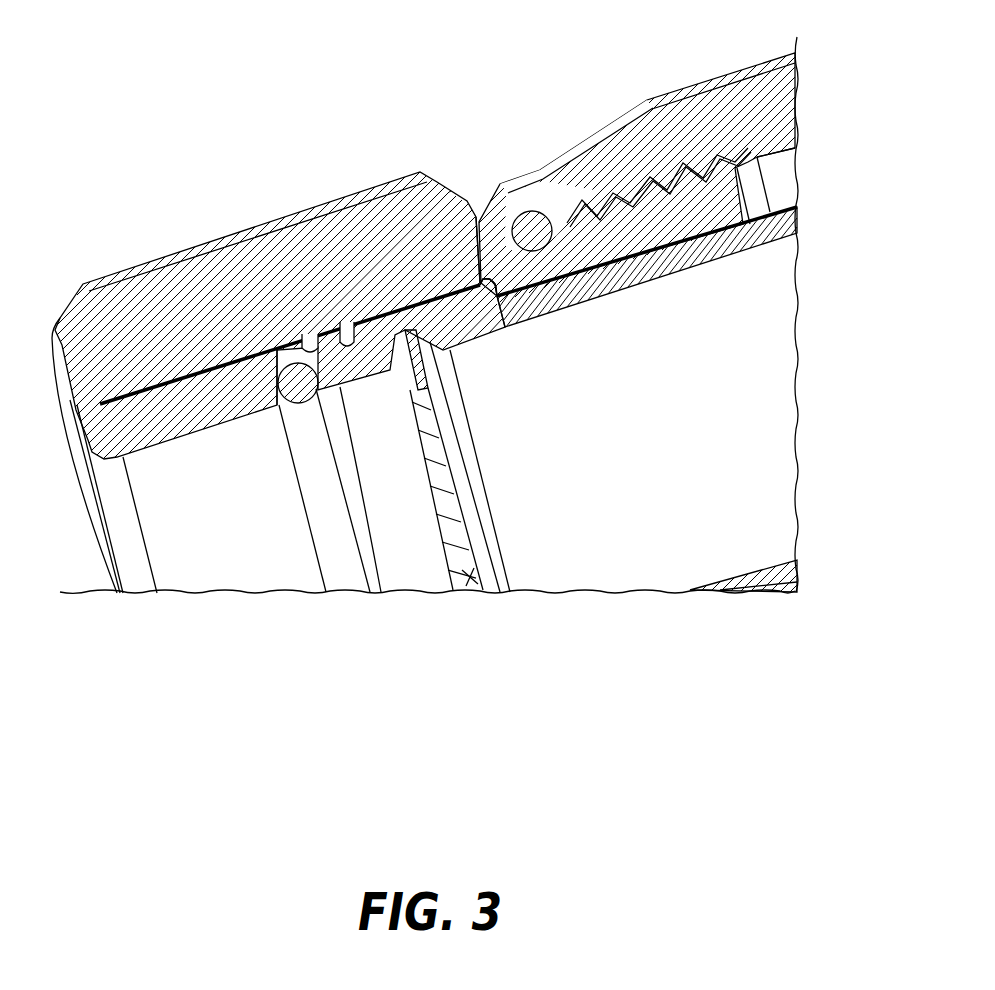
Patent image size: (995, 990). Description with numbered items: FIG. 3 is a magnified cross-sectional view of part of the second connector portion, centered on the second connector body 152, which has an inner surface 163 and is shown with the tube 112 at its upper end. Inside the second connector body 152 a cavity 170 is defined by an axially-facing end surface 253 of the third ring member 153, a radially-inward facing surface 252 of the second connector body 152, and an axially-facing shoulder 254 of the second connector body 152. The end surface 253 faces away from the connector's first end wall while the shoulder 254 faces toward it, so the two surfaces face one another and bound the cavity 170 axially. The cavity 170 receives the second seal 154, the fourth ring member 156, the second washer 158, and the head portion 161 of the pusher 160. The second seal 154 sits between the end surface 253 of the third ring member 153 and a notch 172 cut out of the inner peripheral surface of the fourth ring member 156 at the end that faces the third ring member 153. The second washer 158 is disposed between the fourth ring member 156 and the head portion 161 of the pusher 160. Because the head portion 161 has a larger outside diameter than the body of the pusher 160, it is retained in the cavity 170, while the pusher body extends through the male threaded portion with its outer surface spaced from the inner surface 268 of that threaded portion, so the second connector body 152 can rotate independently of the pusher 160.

The tube 112 is at (753, 102).
The second connector body 152 is at (98, 310).
The third ring member 153 is at (200, 578).
The second seal 154 is at (349, 576).
The fourth ring member 156 is at (428, 578).
The second washer 158 is at (473, 592).
The pusher 160 is at (655, 573).
The head portion 161 is at (436, 300).
The inner surface 163 is at (608, 287).
The cavity 170 is at (312, 350).
The notch 172 is at (382, 595).
The radially-inward facing surface 252 is at (347, 345).
The axially-facing end surface 253 is at (275, 355).
The axially-facing shoulder 254 is at (482, 268).
The inner surface 268 is at (682, 252).